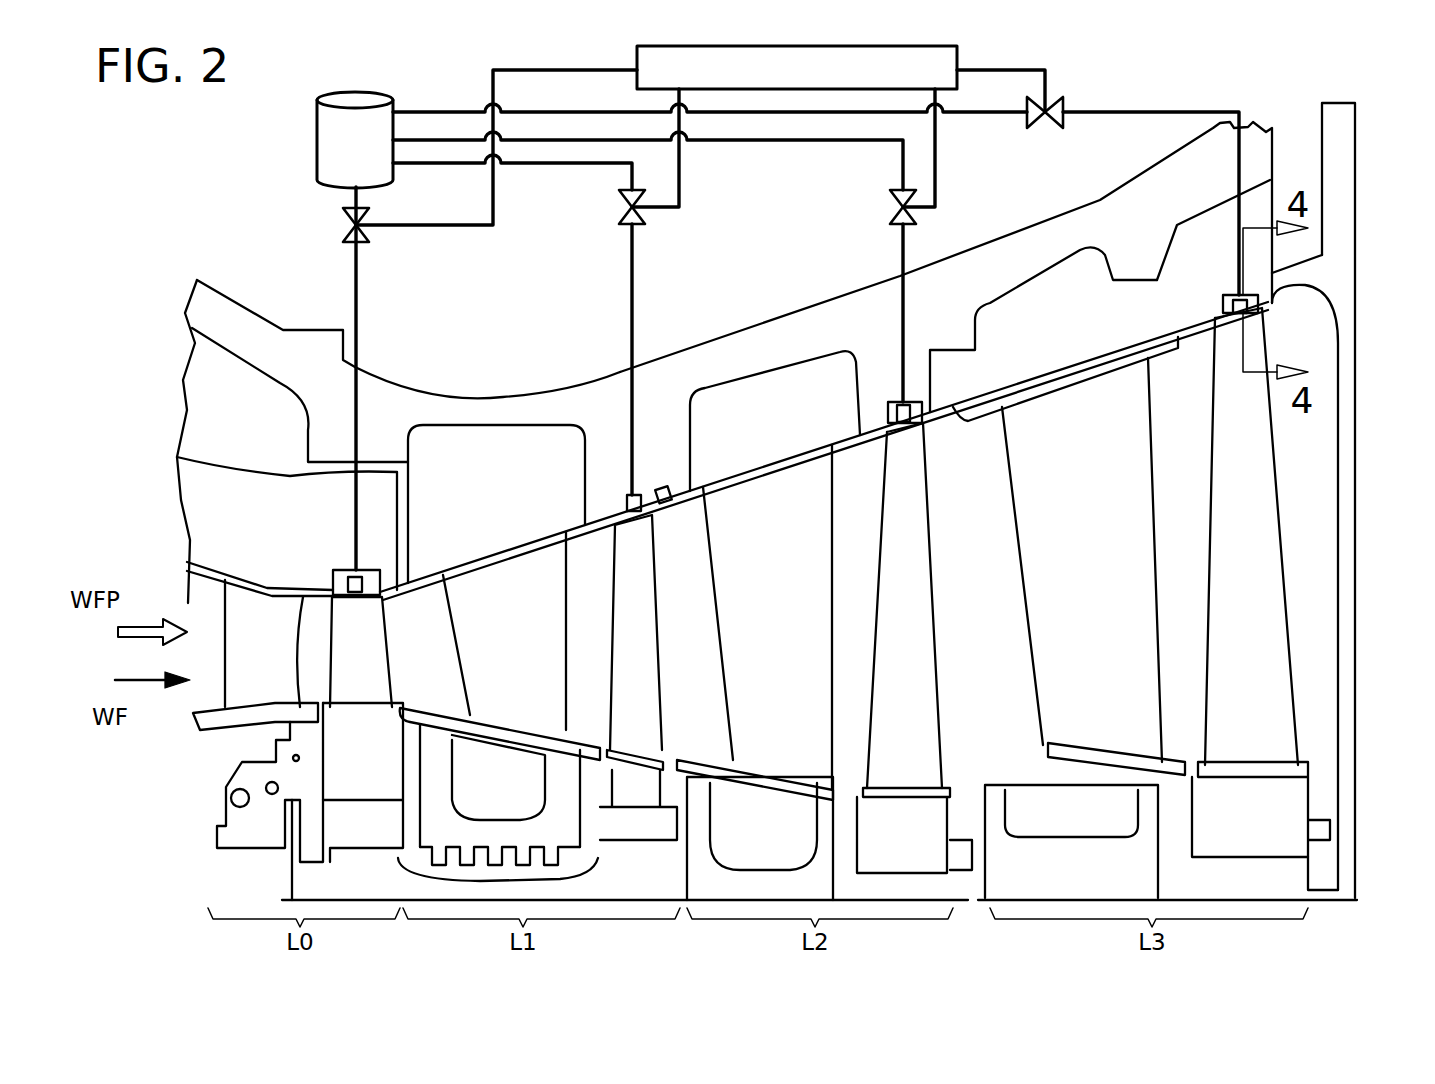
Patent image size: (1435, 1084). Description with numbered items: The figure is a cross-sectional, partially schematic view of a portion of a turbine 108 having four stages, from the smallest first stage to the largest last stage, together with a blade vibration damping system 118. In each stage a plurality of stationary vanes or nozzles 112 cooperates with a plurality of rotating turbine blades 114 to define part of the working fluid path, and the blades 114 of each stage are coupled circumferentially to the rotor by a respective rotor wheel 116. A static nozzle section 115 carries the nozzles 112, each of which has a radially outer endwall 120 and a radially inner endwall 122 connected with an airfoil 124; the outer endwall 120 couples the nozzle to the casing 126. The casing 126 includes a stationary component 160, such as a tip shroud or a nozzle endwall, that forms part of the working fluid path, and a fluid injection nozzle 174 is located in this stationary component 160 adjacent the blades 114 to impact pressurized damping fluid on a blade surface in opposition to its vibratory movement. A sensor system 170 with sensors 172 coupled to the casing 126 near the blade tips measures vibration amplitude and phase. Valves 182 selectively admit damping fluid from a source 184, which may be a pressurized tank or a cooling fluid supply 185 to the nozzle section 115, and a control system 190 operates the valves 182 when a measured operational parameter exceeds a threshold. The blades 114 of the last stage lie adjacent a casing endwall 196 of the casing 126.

The turbine 108 is at (476, 315).
The stationary vanes or nozzles 112 is at (230, 661).
The turbine blades 114 is at (335, 661).
The static nozzle section 115 is at (741, 445).
The rotor wheel 116 is at (357, 825).
The blade vibration damping system 118 is at (1200, 88).
The radially outer endwall 120 is at (510, 555).
The radially inner endwall 122 is at (560, 735).
The airfoil 124 is at (553, 605).
The casing 126 is at (510, 410).
The stationary component 160 is at (410, 601).
The sensor system 170 is at (1268, 283).
The sensors 172 is at (340, 570).
The fluid injection nozzle 174 is at (350, 582).
The valve 182 is at (346, 227).
The source of pressurized damping fluid 184 is at (334, 159).
The cooling fluid supply 185 is at (465, 440).
The control system 190 is at (912, 85).
The casing endwall 196 is at (1357, 538).